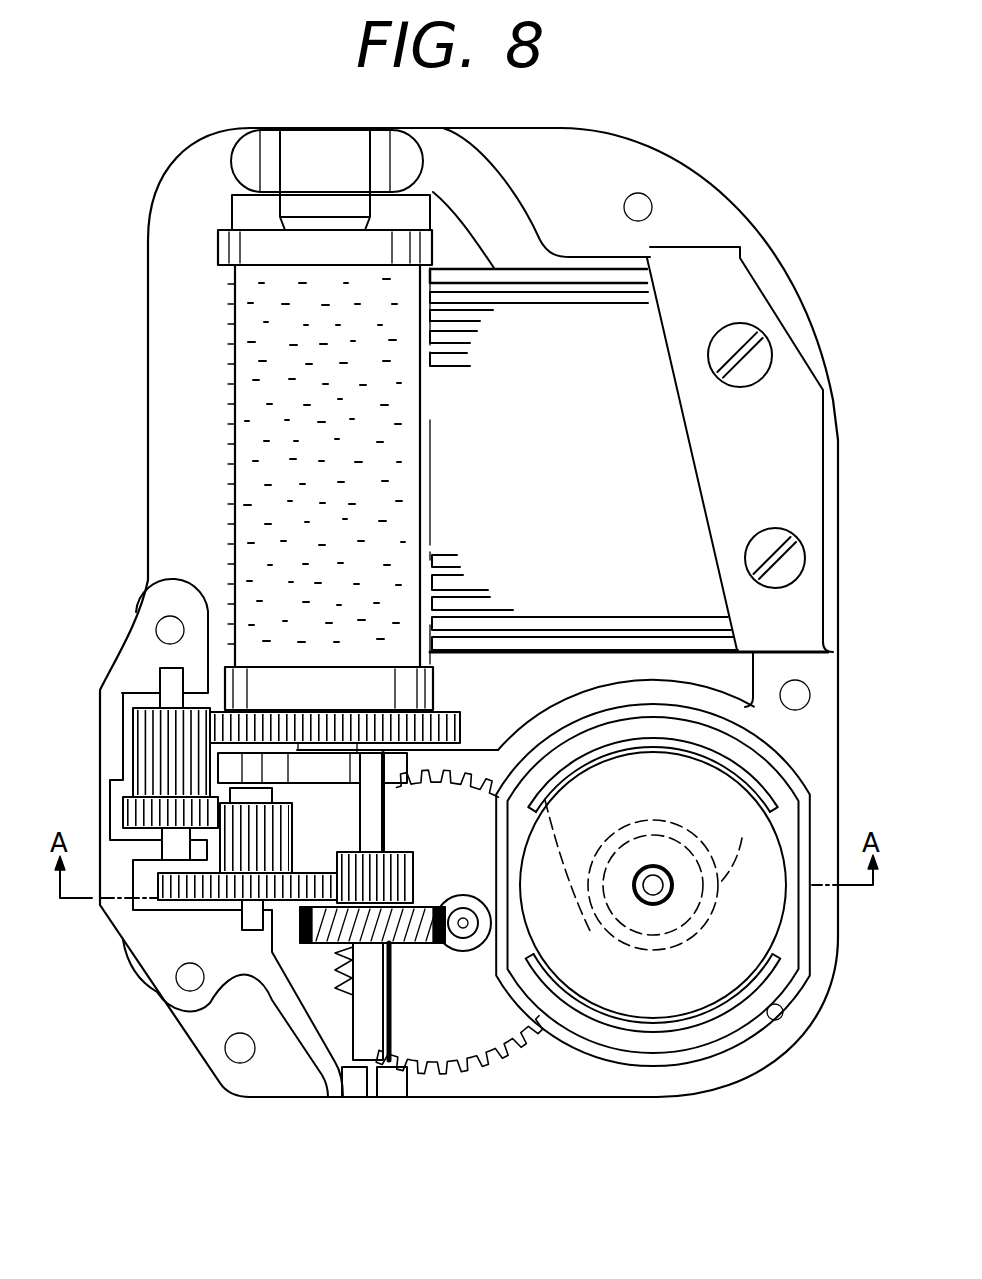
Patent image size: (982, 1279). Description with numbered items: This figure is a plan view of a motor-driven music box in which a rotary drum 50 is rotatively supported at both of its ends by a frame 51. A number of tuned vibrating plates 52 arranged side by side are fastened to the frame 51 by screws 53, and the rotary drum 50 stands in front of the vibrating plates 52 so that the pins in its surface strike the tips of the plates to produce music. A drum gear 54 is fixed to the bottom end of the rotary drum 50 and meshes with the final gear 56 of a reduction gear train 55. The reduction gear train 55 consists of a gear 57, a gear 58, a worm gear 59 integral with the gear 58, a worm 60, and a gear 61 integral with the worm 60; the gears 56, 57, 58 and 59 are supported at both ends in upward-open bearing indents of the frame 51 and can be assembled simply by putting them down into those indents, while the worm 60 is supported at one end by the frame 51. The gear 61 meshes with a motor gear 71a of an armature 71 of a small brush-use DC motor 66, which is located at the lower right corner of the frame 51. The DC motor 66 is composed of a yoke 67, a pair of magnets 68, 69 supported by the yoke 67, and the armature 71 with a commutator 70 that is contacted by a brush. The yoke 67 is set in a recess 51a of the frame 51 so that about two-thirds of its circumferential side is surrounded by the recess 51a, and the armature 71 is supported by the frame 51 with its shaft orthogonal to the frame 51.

The rotary drum 50 is at (240, 455).
The frame 51 is at (178, 280).
The recess 51a is at (793, 1012).
The tuned vibrating plates 52 is at (570, 325).
The screw 53 is at (750, 338).
The drum gear 54 is at (460, 718).
The reduction gear train 55 is at (178, 938).
The final gear 56 is at (133, 752).
The gear 57 is at (305, 865).
The gear 58 is at (410, 858).
The worm gear 59 is at (415, 945).
The worm 60 is at (463, 950).
The gear 61 is at (432, 1046).
The small brush-use DC motor 66 is at (795, 750).
The yoke 67 is at (800, 800).
The magnet 68 is at (655, 733).
The magnet 69 is at (797, 970).
The commutator 70 is at (640, 885).
The armature 71 is at (768, 915).
The motor gear 71a is at (659, 875).